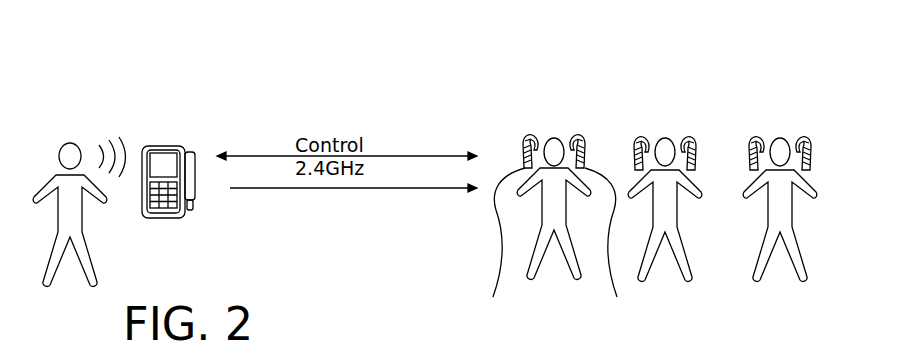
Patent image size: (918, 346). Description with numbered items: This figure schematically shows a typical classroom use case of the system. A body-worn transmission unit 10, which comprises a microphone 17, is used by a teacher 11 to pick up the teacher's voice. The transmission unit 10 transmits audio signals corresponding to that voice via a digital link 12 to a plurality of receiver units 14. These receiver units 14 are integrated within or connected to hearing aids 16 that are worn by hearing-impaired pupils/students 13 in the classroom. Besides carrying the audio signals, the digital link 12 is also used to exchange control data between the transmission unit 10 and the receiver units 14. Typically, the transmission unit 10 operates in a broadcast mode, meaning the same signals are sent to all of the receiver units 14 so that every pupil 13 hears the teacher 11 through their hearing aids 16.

The body-worn transmission unit 10 is at (160, 146).
The teacher 11 is at (70, 141).
The digital link 12 is at (350, 215).
The hearing-impaired pupils/students 13 is at (557, 138).
The receiver units 14 is at (552, 248).
The hearing aids 16 is at (530, 136).
The microphone 17 is at (198, 152).